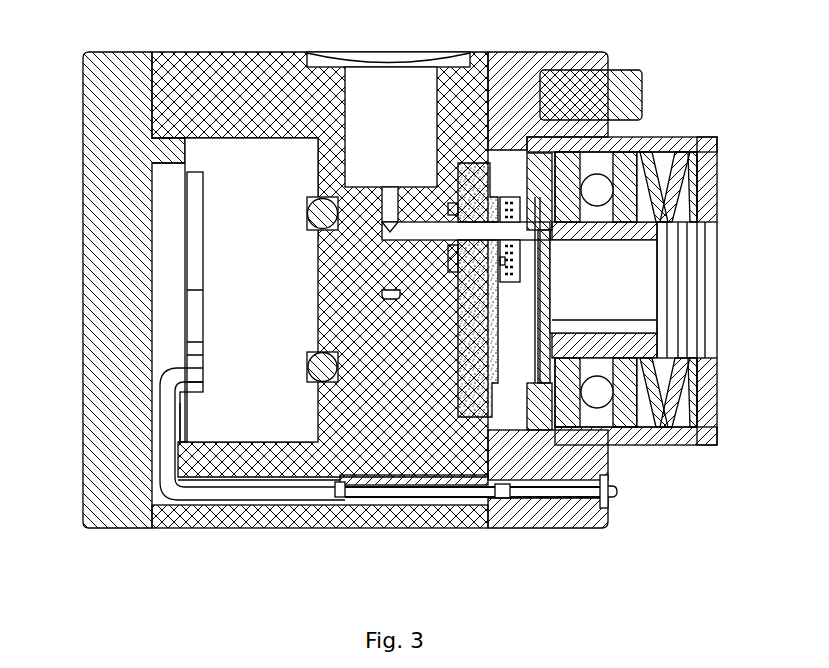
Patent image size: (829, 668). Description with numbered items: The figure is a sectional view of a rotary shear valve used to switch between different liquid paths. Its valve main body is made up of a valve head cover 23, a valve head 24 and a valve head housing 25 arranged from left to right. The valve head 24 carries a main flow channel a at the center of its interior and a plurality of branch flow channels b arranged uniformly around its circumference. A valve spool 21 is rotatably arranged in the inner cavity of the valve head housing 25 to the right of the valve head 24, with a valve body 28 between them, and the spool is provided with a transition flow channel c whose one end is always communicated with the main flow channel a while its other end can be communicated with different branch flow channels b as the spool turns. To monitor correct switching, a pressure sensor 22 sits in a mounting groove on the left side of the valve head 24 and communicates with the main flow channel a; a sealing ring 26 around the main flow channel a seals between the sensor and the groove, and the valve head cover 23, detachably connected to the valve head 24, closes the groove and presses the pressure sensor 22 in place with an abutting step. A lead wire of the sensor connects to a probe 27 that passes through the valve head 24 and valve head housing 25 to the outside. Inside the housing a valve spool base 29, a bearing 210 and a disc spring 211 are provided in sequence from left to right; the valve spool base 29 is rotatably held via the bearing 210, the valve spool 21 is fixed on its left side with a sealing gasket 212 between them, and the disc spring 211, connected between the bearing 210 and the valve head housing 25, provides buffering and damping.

The valve spool 21 is at (585, 410).
The pressure sensor 22 is at (198, 407).
The valve head cover 23 is at (105, 278).
The valve head 24 is at (253, 70).
The valve head housing 25 is at (600, 483).
The sealing ring 26 is at (317, 385).
The probe 27 is at (512, 492).
The valve body 28 is at (477, 392).
The valve spool base 29 is at (640, 200).
The bearing 210 is at (620, 400).
The disc spring 211 is at (707, 200).
The sealing gasket 212 is at (542, 250).
The main flow channel a is at (405, 300).
The branch flow channel b is at (413, 223).
The transition flow channel c is at (533, 280).